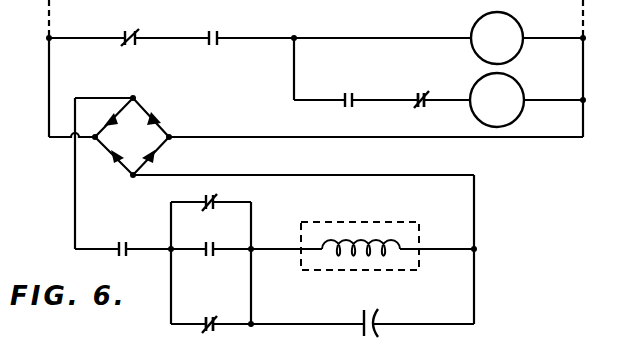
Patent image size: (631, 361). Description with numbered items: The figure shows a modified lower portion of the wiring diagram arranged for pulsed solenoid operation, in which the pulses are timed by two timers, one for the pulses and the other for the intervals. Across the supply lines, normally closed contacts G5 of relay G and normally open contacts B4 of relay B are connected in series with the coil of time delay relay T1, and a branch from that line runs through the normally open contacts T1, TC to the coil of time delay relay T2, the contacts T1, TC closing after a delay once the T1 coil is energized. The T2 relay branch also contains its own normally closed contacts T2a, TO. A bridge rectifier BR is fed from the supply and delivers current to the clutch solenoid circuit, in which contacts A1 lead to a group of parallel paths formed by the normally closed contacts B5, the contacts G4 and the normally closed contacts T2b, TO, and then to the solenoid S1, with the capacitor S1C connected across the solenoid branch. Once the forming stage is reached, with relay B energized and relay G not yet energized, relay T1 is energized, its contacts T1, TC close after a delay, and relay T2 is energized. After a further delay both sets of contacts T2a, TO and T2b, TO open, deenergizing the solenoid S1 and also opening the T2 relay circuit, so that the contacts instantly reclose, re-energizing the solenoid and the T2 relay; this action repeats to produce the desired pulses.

The normally closed contacts G5 is at (127, 31).
The normally open contacts B4 is at (214, 30).
The time delay relay T1 is at (497, 38).
The time delay relay T2 is at (497, 100).
The normally open contacts TC is at (350, 98).
The normally closed contacts T2a is at (419, 98).
The bridge rectifier BR is at (132, 136).
The contacts A1 is at (124, 241).
The normally closed contacts B5 is at (209, 208).
The contacts G4 is at (209, 255).
The normally closed contacts T2b is at (198, 319).
The normally closed time-opening contacts TO is at (315, 218).
The clutch solenoid S1 is at (360, 246).
The capacitor S1C is at (370, 334).